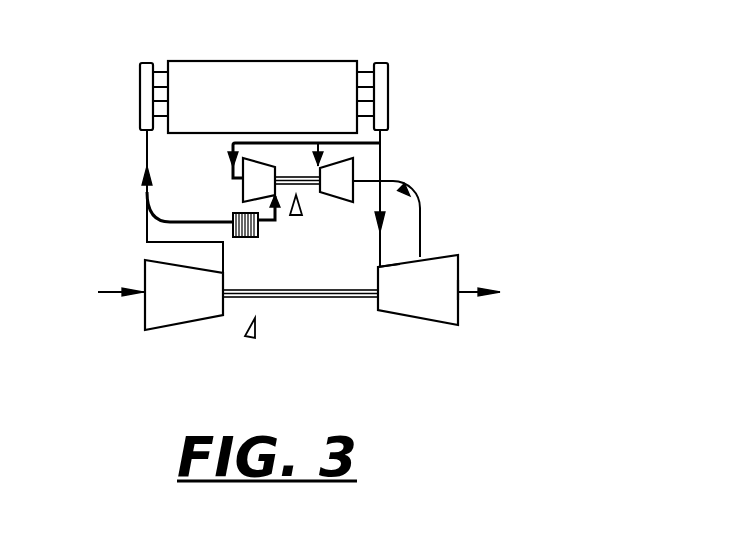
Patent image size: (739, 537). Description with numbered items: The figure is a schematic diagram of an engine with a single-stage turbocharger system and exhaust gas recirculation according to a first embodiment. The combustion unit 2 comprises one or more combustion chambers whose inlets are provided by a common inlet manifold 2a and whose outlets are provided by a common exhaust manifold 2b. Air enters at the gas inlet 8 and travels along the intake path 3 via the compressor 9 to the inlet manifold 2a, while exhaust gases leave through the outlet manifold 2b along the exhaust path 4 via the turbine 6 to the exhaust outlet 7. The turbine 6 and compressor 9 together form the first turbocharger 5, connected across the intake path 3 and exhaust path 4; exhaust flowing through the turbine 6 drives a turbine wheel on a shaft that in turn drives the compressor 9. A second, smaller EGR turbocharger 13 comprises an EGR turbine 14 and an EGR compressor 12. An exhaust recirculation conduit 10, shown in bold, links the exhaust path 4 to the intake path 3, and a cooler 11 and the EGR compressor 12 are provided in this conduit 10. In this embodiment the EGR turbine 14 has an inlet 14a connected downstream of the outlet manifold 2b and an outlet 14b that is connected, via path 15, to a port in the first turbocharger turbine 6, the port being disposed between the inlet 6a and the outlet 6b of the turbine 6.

The combustion unit 2 is at (320, 80).
The inlet manifold 2a is at (148, 97).
The exhaust manifold 2b is at (383, 92).
The intake path 3 is at (147, 150).
The exhaust path 4 is at (383, 142).
The turbocharger 5 is at (250, 336).
The turbine 6 is at (420, 318).
The inlet of turbine 6a is at (382, 263).
The outlet of turbine 6b is at (462, 287).
The exhaust outlet 7 is at (465, 293).
The gas inlet 8 is at (110, 295).
The compressor 9 is at (177, 330).
The exhaust recirculation conduit 10 is at (165, 225).
The cooler 11 is at (248, 238).
The EGR compressor 12 is at (243, 183).
The EGR turbocharger 13 is at (294, 217).
The EGR turbine 14 is at (340, 200).
The inlet of EGR turbine 14a is at (318, 160).
The outlet of EGR turbine 14b is at (360, 190).
The path 15 is at (420, 223).